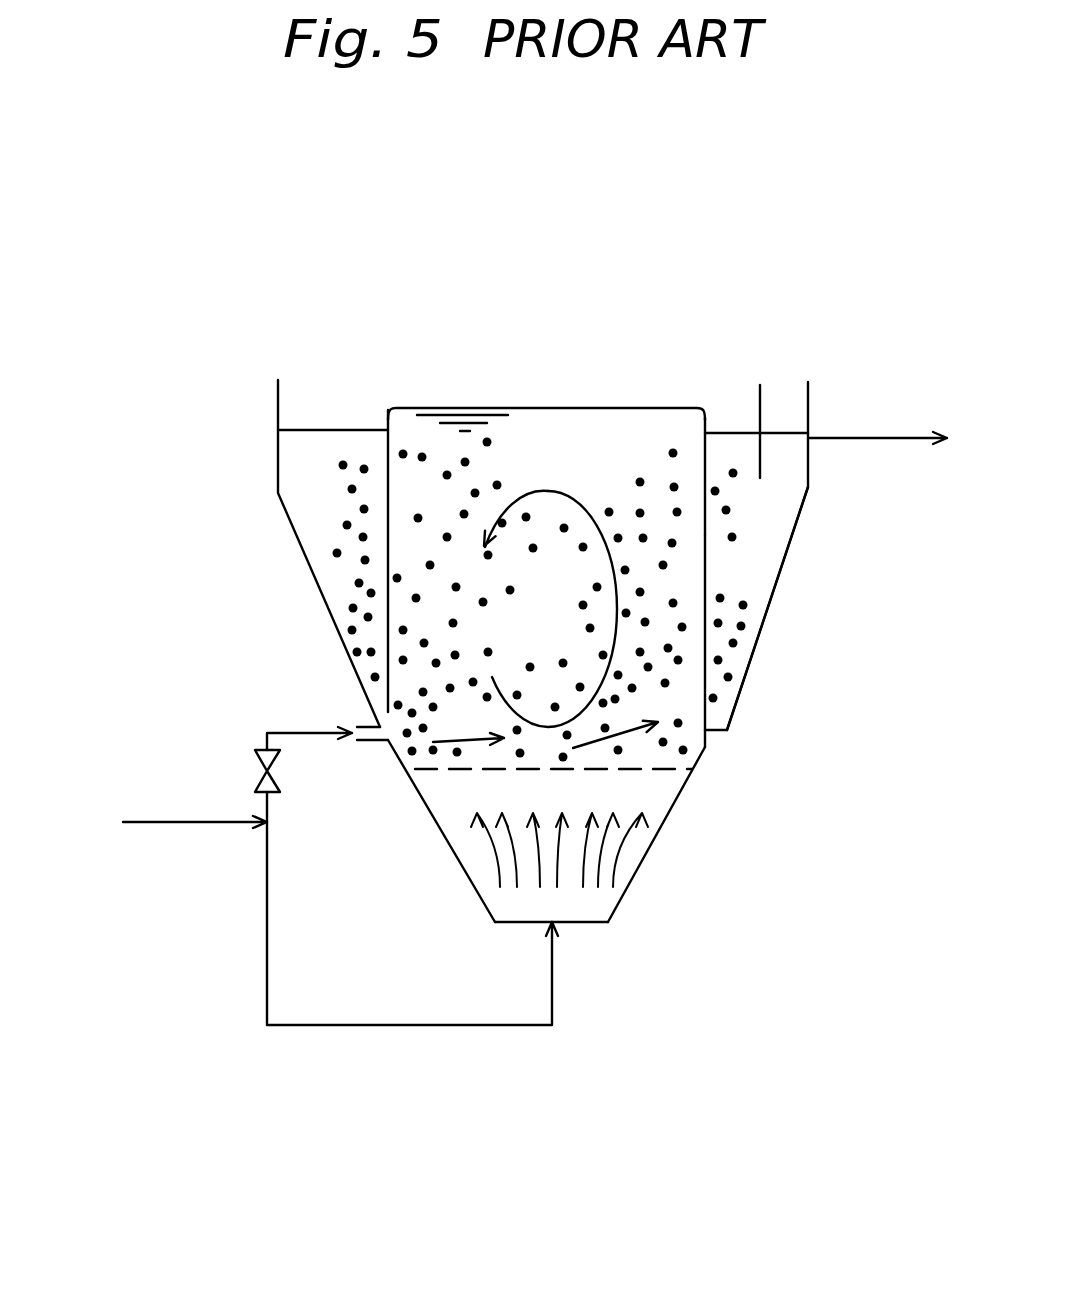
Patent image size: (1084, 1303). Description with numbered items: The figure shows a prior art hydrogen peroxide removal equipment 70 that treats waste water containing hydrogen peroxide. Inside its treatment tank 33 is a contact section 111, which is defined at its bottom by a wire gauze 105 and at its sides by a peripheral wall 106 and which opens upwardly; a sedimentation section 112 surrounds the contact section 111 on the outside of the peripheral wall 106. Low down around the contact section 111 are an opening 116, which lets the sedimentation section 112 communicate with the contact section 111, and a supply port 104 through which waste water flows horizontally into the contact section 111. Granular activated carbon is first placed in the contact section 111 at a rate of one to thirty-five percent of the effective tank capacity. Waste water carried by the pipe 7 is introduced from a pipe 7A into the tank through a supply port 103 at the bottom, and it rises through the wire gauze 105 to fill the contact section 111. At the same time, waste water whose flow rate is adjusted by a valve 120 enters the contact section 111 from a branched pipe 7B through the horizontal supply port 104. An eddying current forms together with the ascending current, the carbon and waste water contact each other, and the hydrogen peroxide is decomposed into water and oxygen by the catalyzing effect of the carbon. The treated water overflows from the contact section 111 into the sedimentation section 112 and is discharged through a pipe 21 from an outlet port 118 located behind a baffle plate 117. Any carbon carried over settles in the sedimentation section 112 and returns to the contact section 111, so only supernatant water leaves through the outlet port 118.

The hydrogen peroxide removal equipment 70 is at (229, 370).
The treatment tank 33 is at (431, 378).
The baffle plate 117 is at (760, 398).
The outlet port 118 is at (808, 437).
The pipe 21 is at (878, 438).
The peripheral wall 106 is at (705, 525).
The contact section 111 is at (720, 567).
The sedimentation section 112 is at (776, 637).
The opening 116 is at (382, 713).
The supply port 104 is at (201, 644).
The valve 120 is at (126, 726).
The branched pipe 7B is at (292, 735).
The pipe 7 is at (190, 823).
The pipe 7A is at (415, 1025).
The supply port 103 is at (562, 928).
The wire gauze 105 is at (648, 772).